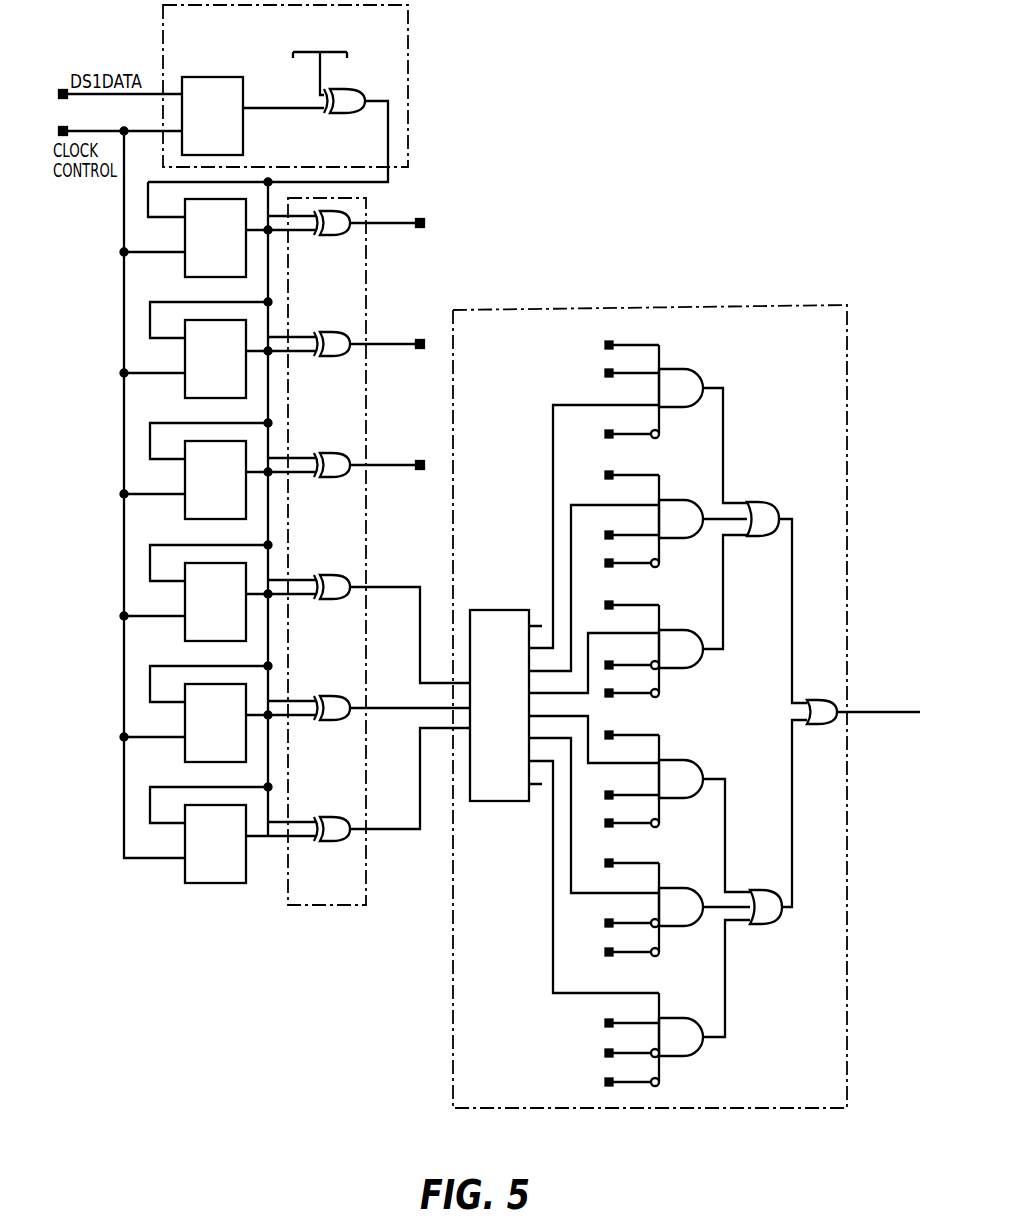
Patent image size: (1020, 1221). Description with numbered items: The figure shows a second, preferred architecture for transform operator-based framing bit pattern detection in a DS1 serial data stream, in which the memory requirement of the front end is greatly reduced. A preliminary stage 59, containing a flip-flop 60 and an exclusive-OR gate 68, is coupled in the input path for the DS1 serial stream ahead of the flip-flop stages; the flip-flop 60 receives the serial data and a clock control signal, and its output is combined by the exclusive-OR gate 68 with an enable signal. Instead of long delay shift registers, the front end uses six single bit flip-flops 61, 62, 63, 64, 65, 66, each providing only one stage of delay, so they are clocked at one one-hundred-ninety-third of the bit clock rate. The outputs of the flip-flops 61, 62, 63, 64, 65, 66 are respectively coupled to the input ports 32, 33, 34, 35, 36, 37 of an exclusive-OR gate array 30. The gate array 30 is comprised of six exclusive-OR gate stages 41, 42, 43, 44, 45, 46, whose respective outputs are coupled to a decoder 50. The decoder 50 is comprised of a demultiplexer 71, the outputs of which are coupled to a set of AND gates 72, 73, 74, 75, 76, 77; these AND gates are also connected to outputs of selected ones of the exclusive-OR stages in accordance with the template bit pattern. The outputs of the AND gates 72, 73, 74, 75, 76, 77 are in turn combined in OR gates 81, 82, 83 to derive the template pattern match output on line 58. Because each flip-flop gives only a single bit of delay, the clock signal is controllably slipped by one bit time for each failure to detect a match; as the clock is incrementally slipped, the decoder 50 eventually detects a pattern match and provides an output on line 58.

The preliminary stage 59 is at (408, 103).
The flip-flop 60 is at (214, 79).
The exclusive-OR gate 68 is at (356, 89).
The single bit flip-flop 61 is at (185, 271).
The single bit flip-flop 62 is at (185, 392).
The single bit flip-flop 63 is at (185, 513).
The single bit flip-flop 64 is at (185, 635).
The single bit flip-flop 65 is at (185, 756).
The single bit flip-flop 66 is at (185, 877).
The exclusive-OR gate array 30 is at (366, 271).
The input port 32 is at (297, 235).
The input port 33 is at (297, 356).
The input port 34 is at (297, 477).
The input port 35 is at (297, 599).
The input port 36 is at (297, 720).
The input port 37 is at (297, 841).
The exclusive-OR gate stage 41 is at (332, 237).
The exclusive-OR gate stage 42 is at (332, 358).
The exclusive-OR gate stage 43 is at (332, 479).
The exclusive-OR gate stage 44 is at (332, 601).
The exclusive-OR gate stage 45 is at (332, 722).
The exclusive-OR gate stage 46 is at (332, 843).
The decoder 50 is at (760, 305).
The demultiplexer 71 is at (492, 610).
The AND gate 72 is at (682, 369).
The AND gate 73 is at (682, 500).
The AND gate 74 is at (682, 631).
The AND gate 75 is at (682, 761).
The AND gate 76 is at (675, 887).
The AND gate 77 is at (678, 1009).
The OR gate 81 is at (766, 502).
The OR gate 82 is at (766, 890).
The OR gate 83 is at (823, 725).
The line 58 is at (875, 714).